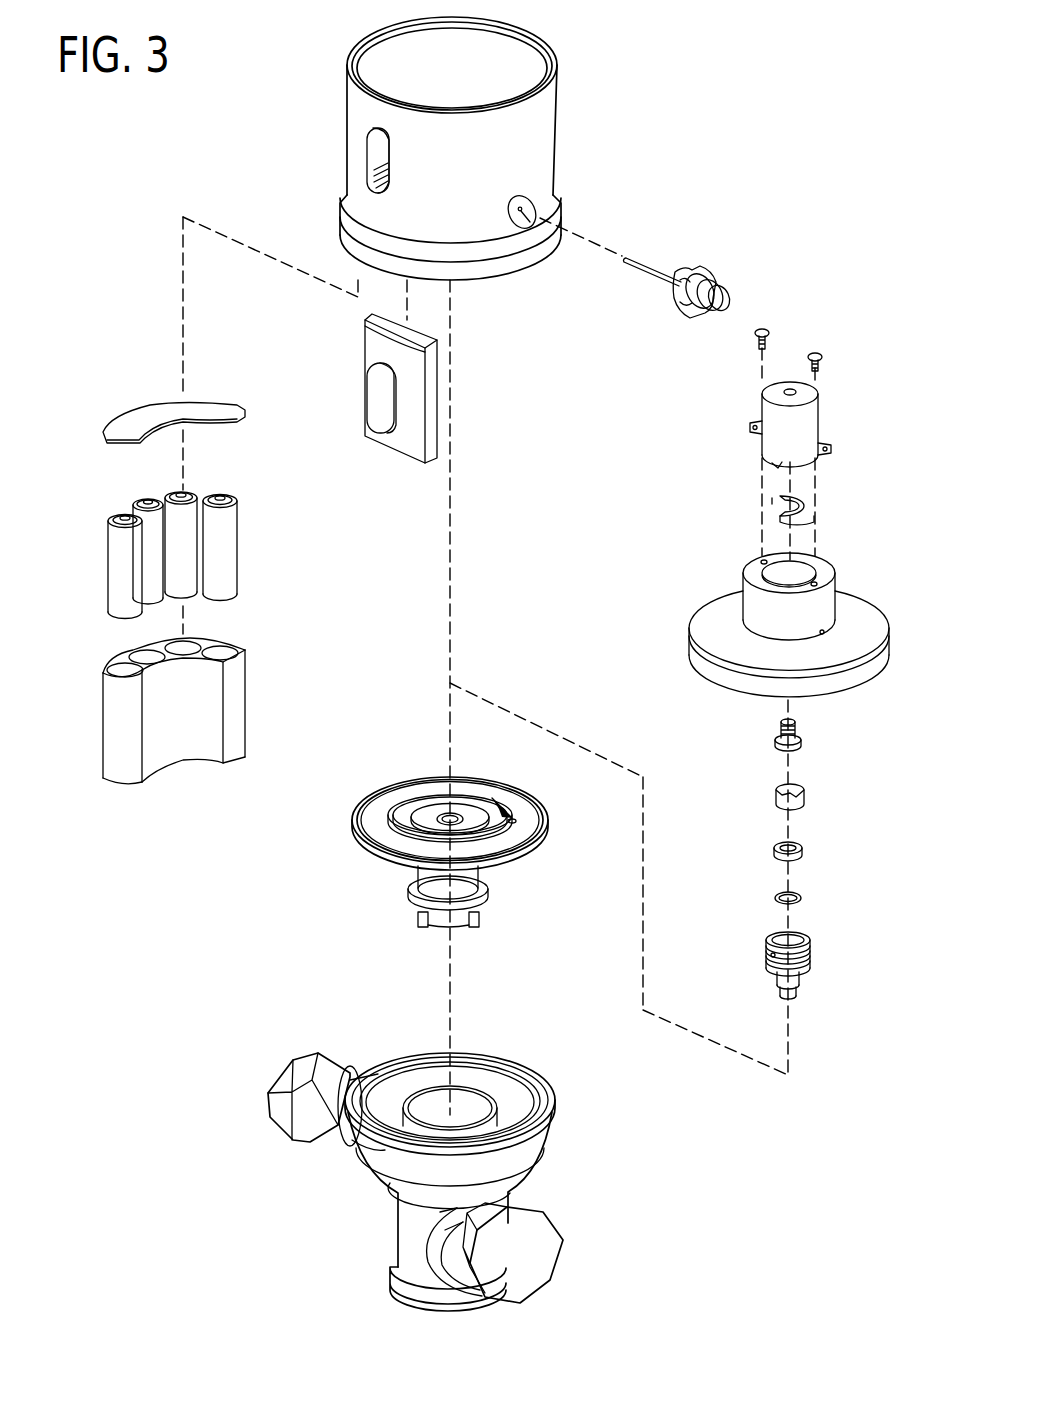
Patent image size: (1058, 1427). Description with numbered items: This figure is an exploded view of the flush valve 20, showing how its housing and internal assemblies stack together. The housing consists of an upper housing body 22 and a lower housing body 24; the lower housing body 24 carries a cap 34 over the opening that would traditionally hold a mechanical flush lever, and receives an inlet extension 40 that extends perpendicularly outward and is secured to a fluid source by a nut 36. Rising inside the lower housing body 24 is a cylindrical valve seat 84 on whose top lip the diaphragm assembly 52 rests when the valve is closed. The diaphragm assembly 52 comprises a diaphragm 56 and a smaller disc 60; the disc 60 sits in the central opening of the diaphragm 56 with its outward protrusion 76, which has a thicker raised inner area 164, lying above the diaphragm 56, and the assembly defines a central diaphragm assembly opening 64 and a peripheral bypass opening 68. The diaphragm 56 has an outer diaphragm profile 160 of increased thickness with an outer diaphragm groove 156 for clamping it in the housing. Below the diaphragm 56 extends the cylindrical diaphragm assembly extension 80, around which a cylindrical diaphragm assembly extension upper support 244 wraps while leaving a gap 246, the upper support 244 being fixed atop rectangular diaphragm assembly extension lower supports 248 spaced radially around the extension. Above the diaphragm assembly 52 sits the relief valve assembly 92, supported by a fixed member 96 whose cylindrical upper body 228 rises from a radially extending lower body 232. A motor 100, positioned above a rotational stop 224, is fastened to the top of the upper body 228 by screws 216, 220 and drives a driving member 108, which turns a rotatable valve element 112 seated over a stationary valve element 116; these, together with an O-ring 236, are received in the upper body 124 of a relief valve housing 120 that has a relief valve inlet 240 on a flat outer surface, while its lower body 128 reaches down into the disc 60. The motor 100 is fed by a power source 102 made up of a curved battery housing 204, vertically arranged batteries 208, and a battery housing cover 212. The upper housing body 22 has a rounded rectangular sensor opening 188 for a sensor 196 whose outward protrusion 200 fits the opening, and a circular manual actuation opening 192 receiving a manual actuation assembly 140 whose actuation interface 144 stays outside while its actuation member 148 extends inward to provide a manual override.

The flush valve 20 is at (749, 112).
The upper housing body 22 is at (443, 142).
The lower housing body 24 is at (416, 1176).
The cap 34 is at (533, 1258).
The nut 36 is at (297, 1072).
The inlet extension 40 is at (330, 1128).
The diaphragm assembly 52 is at (412, 851).
The diaphragm 56 is at (428, 790).
The disc 60 is at (485, 805).
The diaphragm assembly opening 64 is at (465, 818).
The bypass opening 68 is at (508, 800).
The outward protrusion 76 is at (485, 838).
The diaphragm assembly extension 80 is at (492, 893).
The valve seat 84 is at (497, 1107).
The relief valve assembly 92 is at (634, 536).
The fixed member 96 is at (767, 596).
The motor 100 is at (805, 433).
The power source 102 is at (282, 550).
The driving member 108 is at (800, 733).
The rotatable valve element 112 is at (800, 803).
The stationary valve element 116 is at (800, 857).
The relief valve housing 120 is at (827, 962).
The upper body 124 is at (797, 933).
The lower body 128 is at (855, 968).
The manual actuation assembly 140 is at (665, 260).
The actuation interface 144 is at (718, 306).
The actuation member 148 is at (652, 273).
The outer diaphragm groove 156 is at (357, 812).
The outer diaphragm profile 160 is at (378, 797).
The raised inner area 164 is at (440, 812).
The sensor opening 188 is at (372, 158).
The manual actuation opening 192 is at (531, 200).
The sensor 196 is at (392, 405).
The outward protrusion 200 is at (377, 412).
The battery housing 204 is at (124, 757).
The batteries 208 is at (130, 507).
The battery housing cover 212 is at (143, 405).
The screw 216 is at (769, 333).
The screw 220 is at (822, 357).
The rotational stop 224 is at (808, 508).
The upper body 228 is at (743, 593).
The lower body 232 is at (715, 627).
The O-ring 236 is at (778, 898).
The relief valve inlet 240 is at (772, 948).
The diaphragm assembly extension upper support 244 is at (483, 890).
The gap 246 is at (421, 893).
The diaphragm assembly extension lower supports 248 is at (426, 925).